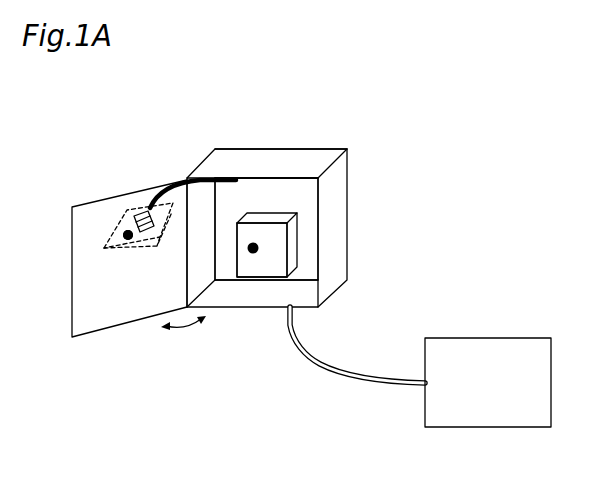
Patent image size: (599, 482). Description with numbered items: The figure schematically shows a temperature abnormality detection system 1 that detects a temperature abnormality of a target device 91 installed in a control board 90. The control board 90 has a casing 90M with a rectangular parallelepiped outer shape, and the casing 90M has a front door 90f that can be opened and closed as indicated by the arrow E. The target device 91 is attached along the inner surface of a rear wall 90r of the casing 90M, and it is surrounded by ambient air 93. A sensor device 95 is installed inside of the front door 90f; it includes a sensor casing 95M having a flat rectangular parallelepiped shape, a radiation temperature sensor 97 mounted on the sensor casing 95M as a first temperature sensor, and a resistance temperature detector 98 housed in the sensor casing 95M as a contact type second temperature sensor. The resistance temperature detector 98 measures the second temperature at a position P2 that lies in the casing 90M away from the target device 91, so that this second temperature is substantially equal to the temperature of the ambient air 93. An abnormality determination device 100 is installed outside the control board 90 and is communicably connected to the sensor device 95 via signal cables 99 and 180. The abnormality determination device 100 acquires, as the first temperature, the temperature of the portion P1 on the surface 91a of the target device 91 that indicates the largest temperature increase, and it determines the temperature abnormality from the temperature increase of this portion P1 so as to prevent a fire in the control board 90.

The temperature abnormality detection system 1 is at (415, 131).
The control board 90 is at (309, 140).
The casing 90M is at (239, 152).
The rear wall 90r is at (277, 148).
The front door 90f is at (72, 315).
The ambient air 93 is at (255, 203).
The target device 91 is at (286, 214).
The surface 91a is at (275, 240).
The portion P1 is at (257, 252).
The sensor device 95 is at (122, 204).
The sensor casing 95M is at (143, 210).
The radiation temperature sensor 97 is at (150, 246).
The resistance temperature detector 98 is at (120, 246).
The position P2 is at (126, 243).
The signal cable 99 is at (170, 183).
The arrow E is at (187, 326).
The signal cable 180 is at (345, 379).
The abnormality determination device 100 is at (483, 338).